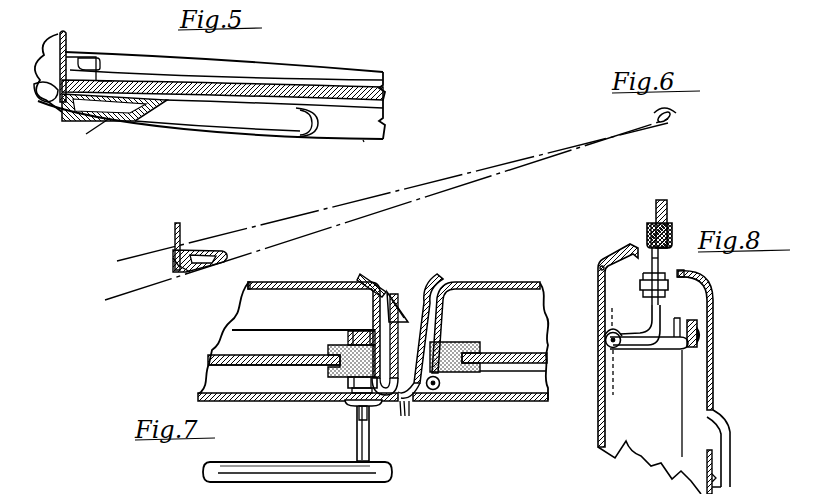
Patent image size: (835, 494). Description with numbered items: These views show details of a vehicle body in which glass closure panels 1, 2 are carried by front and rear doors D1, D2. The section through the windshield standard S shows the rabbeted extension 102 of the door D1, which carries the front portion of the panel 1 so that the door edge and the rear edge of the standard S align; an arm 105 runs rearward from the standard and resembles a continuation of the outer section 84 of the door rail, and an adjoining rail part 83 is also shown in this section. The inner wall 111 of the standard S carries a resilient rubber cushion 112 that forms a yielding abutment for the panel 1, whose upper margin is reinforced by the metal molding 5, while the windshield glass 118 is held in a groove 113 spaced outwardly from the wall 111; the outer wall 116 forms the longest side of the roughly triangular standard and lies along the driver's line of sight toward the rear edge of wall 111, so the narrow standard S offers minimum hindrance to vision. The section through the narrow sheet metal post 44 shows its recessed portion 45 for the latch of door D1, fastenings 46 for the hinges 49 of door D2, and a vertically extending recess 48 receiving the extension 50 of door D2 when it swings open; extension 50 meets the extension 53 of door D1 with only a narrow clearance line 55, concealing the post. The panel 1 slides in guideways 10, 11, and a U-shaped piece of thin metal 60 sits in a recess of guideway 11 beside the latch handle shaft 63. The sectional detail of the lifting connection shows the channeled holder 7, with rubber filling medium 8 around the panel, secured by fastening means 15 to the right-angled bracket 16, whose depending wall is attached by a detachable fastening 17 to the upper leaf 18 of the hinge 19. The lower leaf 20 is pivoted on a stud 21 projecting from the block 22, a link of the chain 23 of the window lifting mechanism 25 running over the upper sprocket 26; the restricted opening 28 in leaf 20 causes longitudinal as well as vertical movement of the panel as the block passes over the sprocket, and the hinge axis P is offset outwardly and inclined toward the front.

In FIG. 5, the panel 1 is at (292, 90).
In FIG. 7, the panel 1 is at (287, 367).
In FIG. 8, the panel 1 is at (668, 202).
In FIG. 7, the panel 2 is at (515, 372).
In FIG. 5, the metal molding 5 is at (84, 142).
In FIG. 8, the channeled holder 7 is at (647, 231).
In FIG. 8, the filling medium 8 is at (651, 224).
In FIG. 5, the guideway 10 is at (88, 62).
In FIG. 7, the guideway 10 is at (455, 345).
In FIG. 7, the guideway 11 is at (340, 348).
In FIG. 8, the fastening means 15 is at (661, 253).
In FIG. 8, the right-angled bracket 16 is at (652, 261).
In FIG. 8, the detachable fastening 17 is at (641, 285).
In FIG. 8, the upper leaf 18 is at (650, 322).
In FIG. 8, the hinge 19 is at (605, 342).
In FIG. 8, the lower leaf 20 is at (660, 350).
In FIG. 8, the stud 21 is at (679, 318).
In FIG. 8, the block 22 is at (700, 338).
In FIG. 8, the chain 23 is at (680, 352).
In FIG. 8, the window lifting mechanism 25 is at (672, 407).
In FIG. 8, the upper sprocket 26 is at (688, 430).
In FIG. 8, the opening 28 is at (698, 322).
In FIG. 7, the sheet metal post 44 is at (428, 275).
In FIG. 7, the recessed portion 45 is at (392, 290).
In FIG. 7, the fastenings 46 is at (406, 322).
In FIG. 7, the vertically extending recess 48 is at (406, 404).
In FIG. 7, the hinges 49 is at (441, 384).
In FIG. 7, the extension 50 is at (409, 408).
In FIG. 7, the extension 53 is at (374, 406).
In FIG. 7, the clearance line 55 is at (400, 412).
In FIG. 7, the U-shaped piece of thin metal 60 is at (349, 383).
In FIG. 7, the latch handle shaft 63 is at (358, 418).
In FIG. 5, the inner sheet 83 is at (243, 66).
In FIG. 5, the outer section of the door rail 84 is at (316, 137).
In FIG. 5, the extension 102 is at (133, 50).
In FIG. 5, the arm 105 is at (213, 128).
In FIG. 5, the inner wall 111 is at (104, 82).
In FIG. 6, the inner wall 111 is at (205, 252).
In FIG. 5, the cushion 112 is at (130, 80).
In FIG. 5, the groove 113 is at (44, 97).
In FIG. 5, the outer wall 116 is at (146, 130).
In FIG. 6, the outer wall 116 is at (200, 266).
In FIG. 5, the windshield glass 118 is at (58, 40).
In FIG. 6, the windshield glass 118 is at (172, 230).
In FIG. 5, the front door D1 is at (363, 140).
In FIG. 7, the front door D1 is at (268, 404).
In FIG. 7, the rear door D2 is at (525, 404).
In FIG. 6, the windshield standard S is at (143, 270).
In FIG. 8, the pivot line or axis P is at (607, 347).